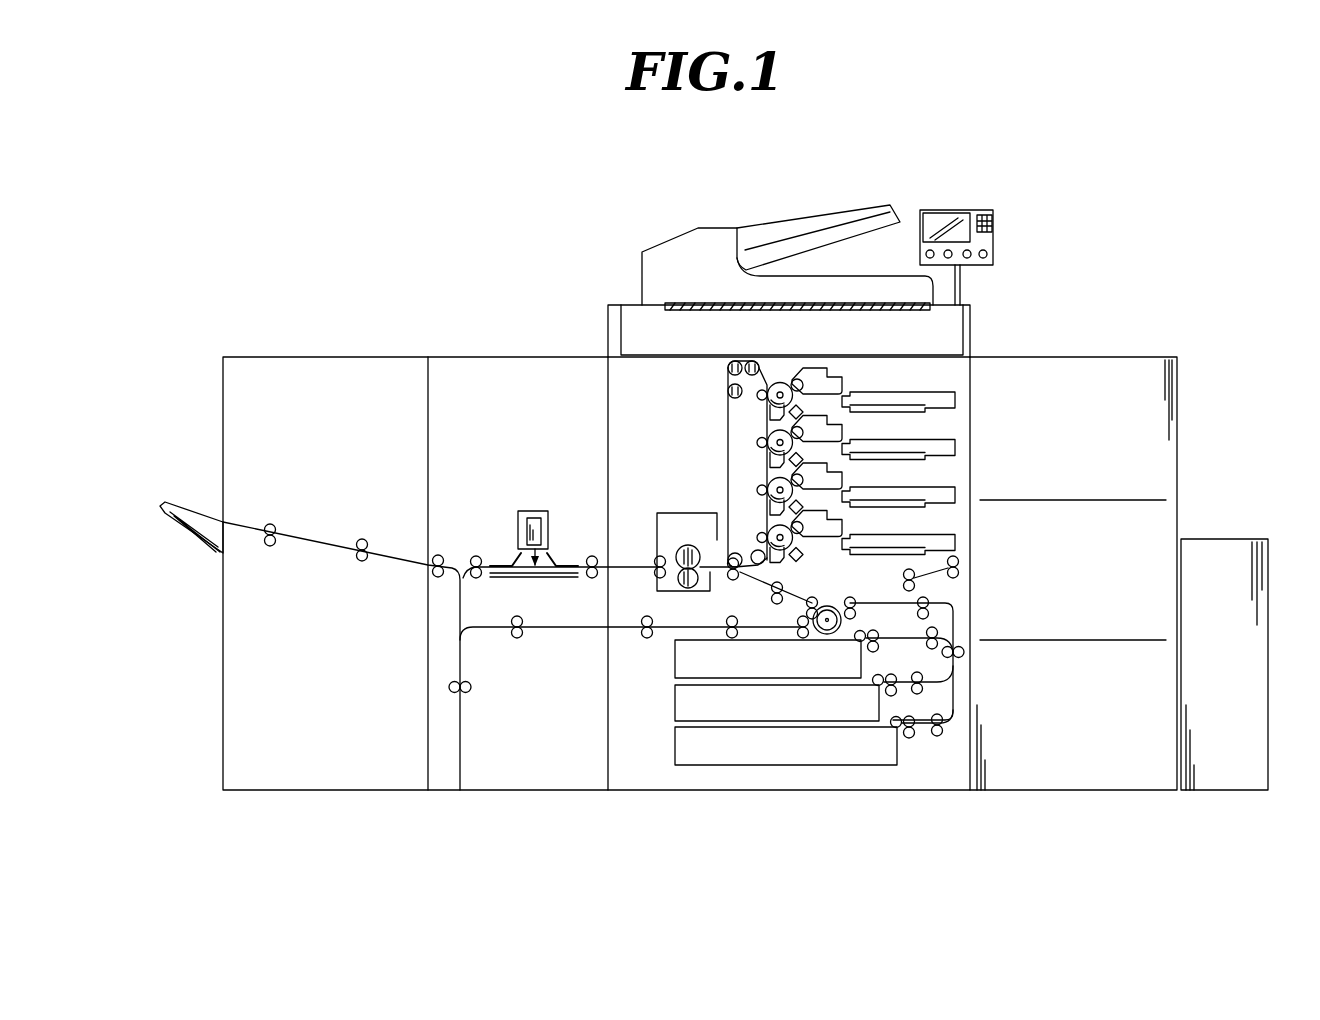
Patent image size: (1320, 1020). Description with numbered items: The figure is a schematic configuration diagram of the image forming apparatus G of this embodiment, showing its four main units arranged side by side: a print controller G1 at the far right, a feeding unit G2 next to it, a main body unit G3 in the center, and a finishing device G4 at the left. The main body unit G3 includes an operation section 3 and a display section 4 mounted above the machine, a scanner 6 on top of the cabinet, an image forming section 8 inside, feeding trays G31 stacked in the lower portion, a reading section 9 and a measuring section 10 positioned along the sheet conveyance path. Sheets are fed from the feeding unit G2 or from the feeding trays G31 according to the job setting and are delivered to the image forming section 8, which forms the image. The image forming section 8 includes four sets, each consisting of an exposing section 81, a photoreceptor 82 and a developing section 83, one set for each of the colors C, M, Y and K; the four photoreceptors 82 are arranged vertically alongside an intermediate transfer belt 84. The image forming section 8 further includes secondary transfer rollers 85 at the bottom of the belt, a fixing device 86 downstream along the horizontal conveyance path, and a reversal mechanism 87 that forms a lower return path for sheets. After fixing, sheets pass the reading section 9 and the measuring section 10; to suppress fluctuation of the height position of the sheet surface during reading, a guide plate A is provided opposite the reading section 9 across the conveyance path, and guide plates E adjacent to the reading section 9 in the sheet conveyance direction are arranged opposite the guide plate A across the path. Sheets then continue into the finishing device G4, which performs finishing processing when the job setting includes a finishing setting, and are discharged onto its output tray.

The image forming apparatus G is at (1002, 147).
The print controller G1 is at (1233, 540).
The feeding unit G2 is at (1138, 356).
The main body unit G3 is at (590, 357).
The feeding trays G31 is at (742, 770).
The finishing device G4 is at (296, 356).
The operation section 3 is at (995, 228).
The display section 4 is at (935, 220).
The scanner 6 is at (632, 310).
The image forming section 8 is at (624, 410).
The reading section 9 is at (540, 522).
The measuring section 10 is at (522, 509).
The exposing section 81 is at (960, 542).
The photoreceptor 82 is at (773, 534).
The developing section 83 is at (842, 525).
The intermediate transfer belt 84 is at (727, 412).
The secondary transfer rollers 85 is at (738, 580).
The fixing device 86 is at (668, 512).
The reversal mechanism 87 is at (471, 639).
The guide plates E is at (567, 560).
The guide plate A is at (540, 581).